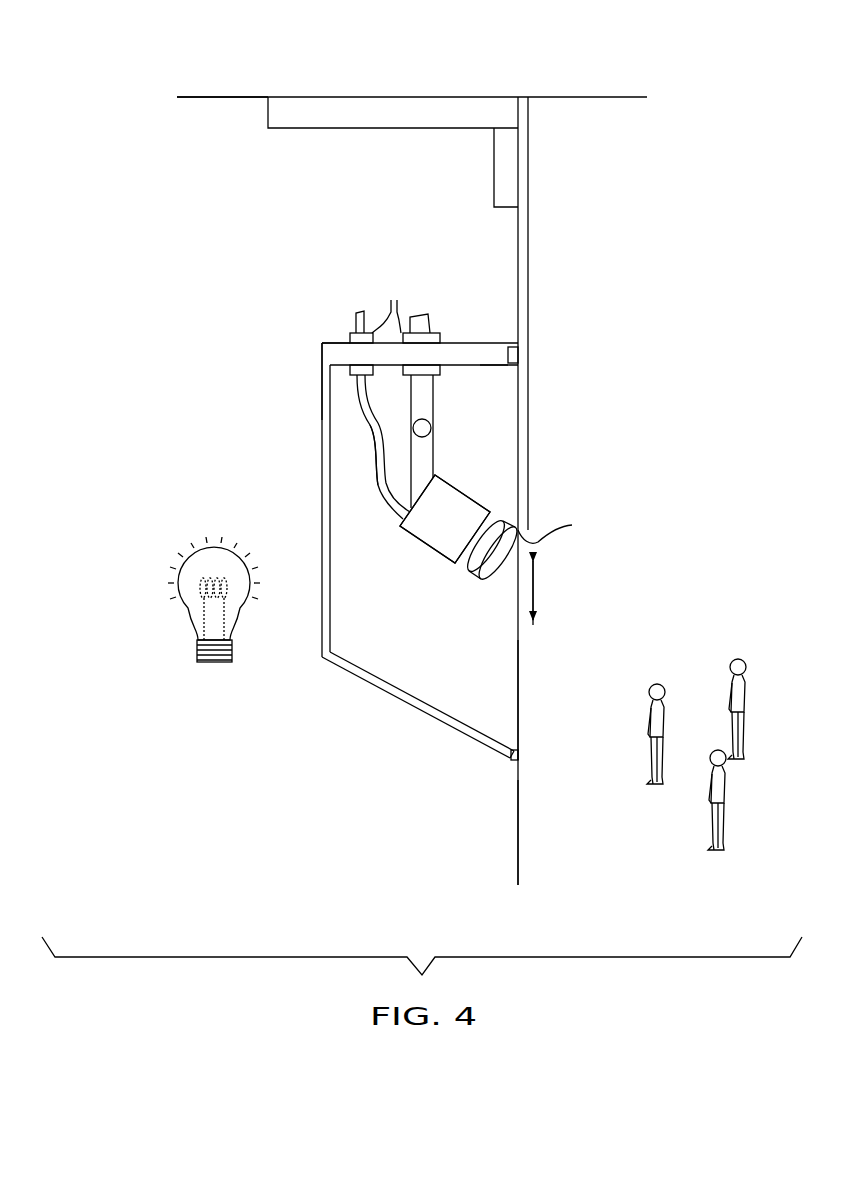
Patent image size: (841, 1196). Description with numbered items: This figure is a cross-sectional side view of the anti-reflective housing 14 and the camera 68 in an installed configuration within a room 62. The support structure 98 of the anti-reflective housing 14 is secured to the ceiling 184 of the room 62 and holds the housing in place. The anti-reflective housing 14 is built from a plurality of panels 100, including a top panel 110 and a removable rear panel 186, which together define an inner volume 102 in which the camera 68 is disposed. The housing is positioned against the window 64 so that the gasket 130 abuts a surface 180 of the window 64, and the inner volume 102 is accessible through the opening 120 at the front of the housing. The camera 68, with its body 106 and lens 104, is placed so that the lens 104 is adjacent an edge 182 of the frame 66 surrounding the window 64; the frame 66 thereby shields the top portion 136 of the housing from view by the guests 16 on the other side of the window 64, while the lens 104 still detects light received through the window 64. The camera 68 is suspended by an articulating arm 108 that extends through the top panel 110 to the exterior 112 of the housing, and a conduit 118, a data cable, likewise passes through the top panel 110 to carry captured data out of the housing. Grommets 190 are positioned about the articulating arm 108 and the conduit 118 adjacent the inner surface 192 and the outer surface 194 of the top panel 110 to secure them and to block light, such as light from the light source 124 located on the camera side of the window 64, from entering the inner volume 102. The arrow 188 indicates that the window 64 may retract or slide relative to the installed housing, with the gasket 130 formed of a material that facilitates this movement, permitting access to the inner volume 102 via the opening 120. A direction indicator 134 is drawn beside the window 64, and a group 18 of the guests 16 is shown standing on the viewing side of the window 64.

The room 62 is at (219, 94).
The ceiling 184 is at (218, 99).
The support structure 98 is at (392, 130).
The frame 66 is at (529, 372).
The window 64 is at (519, 663).
The opening 120 is at (529, 708).
The surface 180 is at (506, 828).
The edge 182 is at (564, 528).
The anti-reflective housing 14 is at (281, 356).
The panels 100 is at (322, 470).
The rear panel 186 is at (322, 390).
The outer surface 194 is at (343, 343).
The top panel 110 is at (468, 345).
The gasket 130 is at (512, 352).
The inner surface 192 is at (492, 366).
The exterior 112 is at (303, 290).
The grommets 190 is at (298, 412).
The conduit 118 is at (372, 433).
The articulating arm 108 is at (430, 396).
The camera 68 is at (428, 537).
The body 106 is at (465, 508).
The lens 104 is at (492, 574).
The inner volume 102 is at (391, 646).
The top portion 136 is at (542, 441).
The direction 134 is at (545, 639).
The arrow 188 is at (536, 592).
The light source 124 is at (183, 556).
The guests 16 is at (654, 680).
The group of persons 18 is at (662, 597).